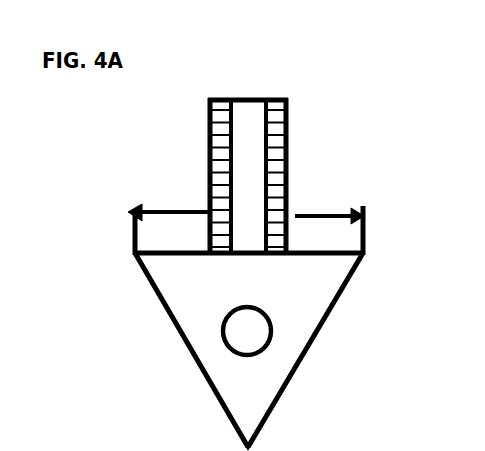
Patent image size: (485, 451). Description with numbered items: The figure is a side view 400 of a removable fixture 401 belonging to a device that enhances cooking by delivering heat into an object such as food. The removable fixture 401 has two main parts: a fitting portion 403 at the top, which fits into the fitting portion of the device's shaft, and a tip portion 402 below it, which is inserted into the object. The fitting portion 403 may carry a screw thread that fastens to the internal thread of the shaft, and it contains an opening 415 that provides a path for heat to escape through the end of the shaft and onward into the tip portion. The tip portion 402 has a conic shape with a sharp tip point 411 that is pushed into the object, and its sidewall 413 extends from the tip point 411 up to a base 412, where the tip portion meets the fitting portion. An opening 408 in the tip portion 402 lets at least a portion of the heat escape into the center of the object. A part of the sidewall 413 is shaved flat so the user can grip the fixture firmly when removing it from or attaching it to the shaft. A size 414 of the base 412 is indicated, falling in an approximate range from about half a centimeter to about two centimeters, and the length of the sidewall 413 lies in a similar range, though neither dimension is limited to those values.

The side view 400 is at (156, 93).
The removable fixture 401 is at (160, 183).
The tip portion 402 is at (312, 346).
The fitting portion 403 is at (286, 173).
The opening 408 is at (230, 347).
The tip point 411 is at (252, 446).
The base 412 is at (363, 233).
The sidewall 413 is at (147, 274).
The size 414 is at (157, 200).
The opening 415 is at (247, 98).